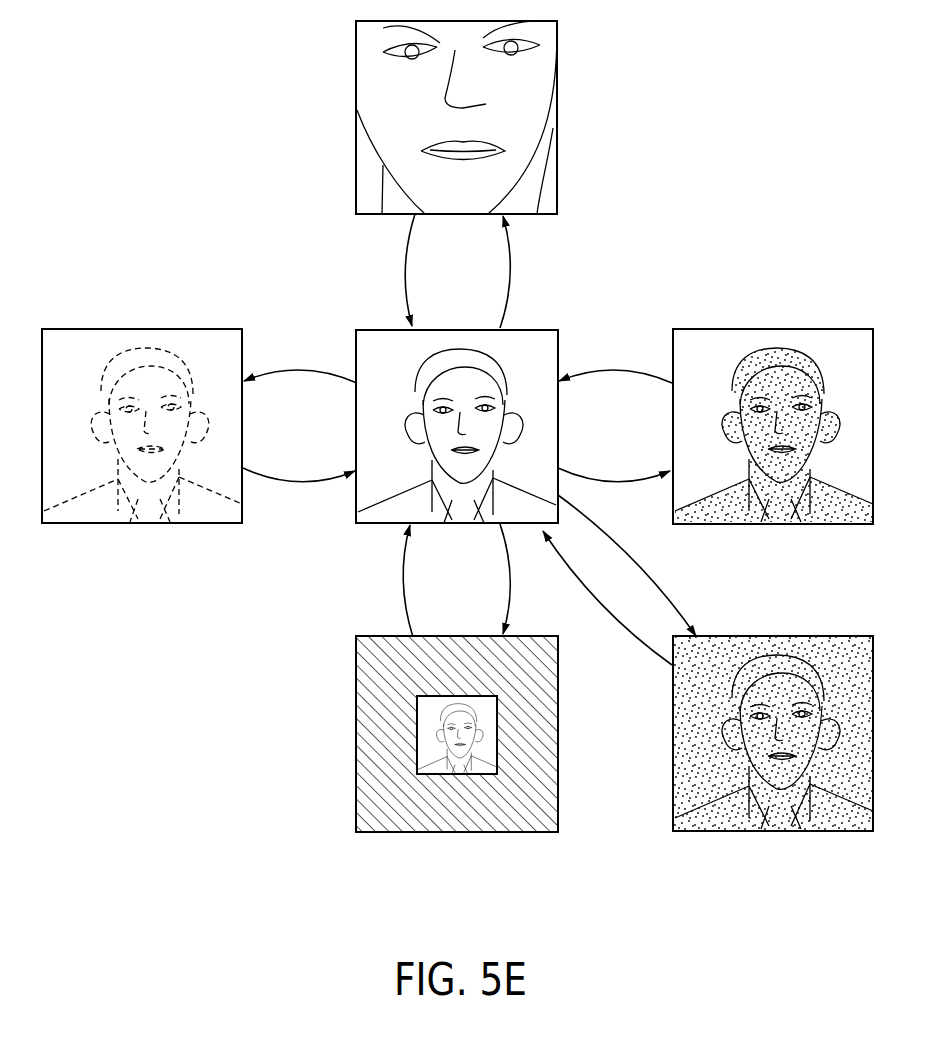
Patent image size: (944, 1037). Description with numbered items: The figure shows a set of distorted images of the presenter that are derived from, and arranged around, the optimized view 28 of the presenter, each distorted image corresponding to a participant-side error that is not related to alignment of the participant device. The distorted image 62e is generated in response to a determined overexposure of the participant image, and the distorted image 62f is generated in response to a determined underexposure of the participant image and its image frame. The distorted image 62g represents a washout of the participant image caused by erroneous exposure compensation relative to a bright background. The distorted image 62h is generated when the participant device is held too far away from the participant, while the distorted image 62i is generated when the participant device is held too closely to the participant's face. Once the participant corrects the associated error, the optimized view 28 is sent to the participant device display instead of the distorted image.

The optimized view 28 is at (445, 524).
The distorted image 62e is at (172, 329).
The distorted image 62f is at (776, 832).
The distorted image 62g is at (800, 329).
The distorted image 62h is at (403, 833).
The distorted image 62i is at (357, 124).